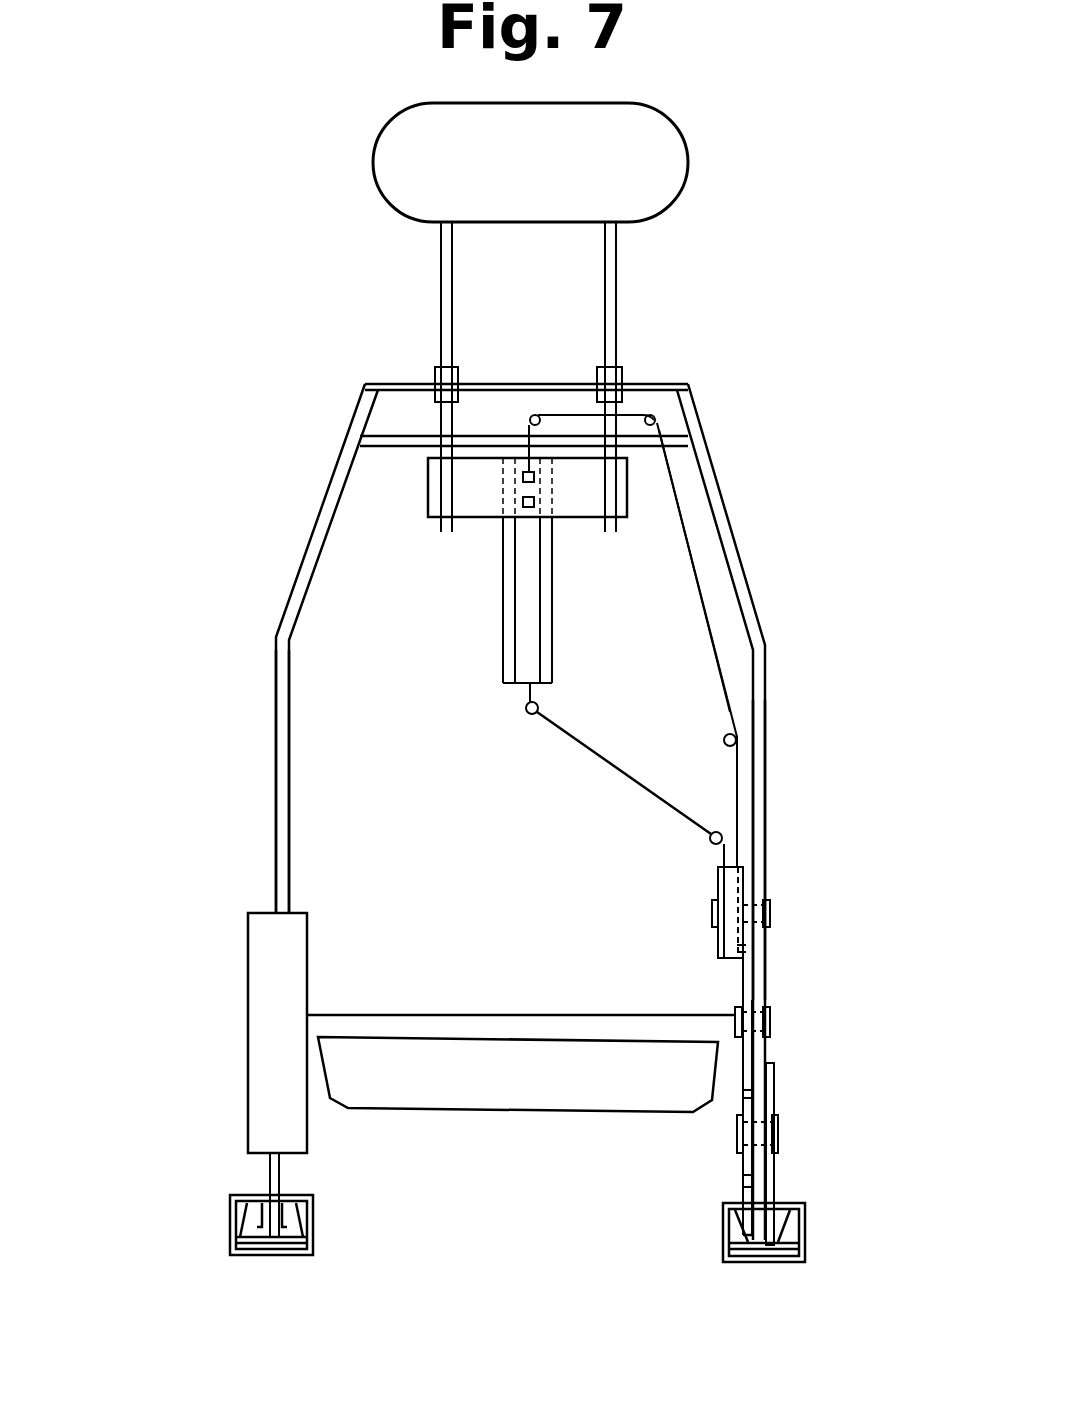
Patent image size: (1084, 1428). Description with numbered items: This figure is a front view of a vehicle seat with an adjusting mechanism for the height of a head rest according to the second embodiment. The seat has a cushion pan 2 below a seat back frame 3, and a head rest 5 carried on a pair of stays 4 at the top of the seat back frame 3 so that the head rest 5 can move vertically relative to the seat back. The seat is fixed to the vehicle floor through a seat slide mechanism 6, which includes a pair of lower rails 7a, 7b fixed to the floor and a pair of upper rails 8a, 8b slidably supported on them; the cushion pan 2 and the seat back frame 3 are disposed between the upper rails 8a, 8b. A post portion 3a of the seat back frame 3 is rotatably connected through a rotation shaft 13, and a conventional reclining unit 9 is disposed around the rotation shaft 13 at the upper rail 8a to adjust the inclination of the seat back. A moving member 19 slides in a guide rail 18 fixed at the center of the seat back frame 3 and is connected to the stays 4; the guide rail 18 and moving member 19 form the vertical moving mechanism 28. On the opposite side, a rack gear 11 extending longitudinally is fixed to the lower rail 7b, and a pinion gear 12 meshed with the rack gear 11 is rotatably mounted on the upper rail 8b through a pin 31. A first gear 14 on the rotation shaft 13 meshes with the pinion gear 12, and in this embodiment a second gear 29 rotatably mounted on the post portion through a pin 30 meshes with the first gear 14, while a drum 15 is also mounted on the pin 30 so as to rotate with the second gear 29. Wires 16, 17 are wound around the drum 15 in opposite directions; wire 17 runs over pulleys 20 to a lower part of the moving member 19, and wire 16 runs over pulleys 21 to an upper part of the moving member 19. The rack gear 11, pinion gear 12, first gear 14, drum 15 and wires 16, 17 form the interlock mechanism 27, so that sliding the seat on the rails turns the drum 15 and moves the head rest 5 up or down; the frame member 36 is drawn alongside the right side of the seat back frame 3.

The cushion pan 2 is at (517, 1100).
The seat back frame 3 is at (298, 526).
The post portion 3a is at (276, 780).
The stay 4 is at (612, 298).
The head rest 5 is at (655, 158).
The seat slide mechanism 6 is at (225, 1228).
The lower rail 7a is at (283, 1258).
The lower rail 7b is at (805, 1245).
The upper rail 8a is at (285, 1178).
The upper rail 8b is at (762, 1175).
The reclining unit 9 is at (258, 1063).
The rack gear 11 is at (745, 1195).
The pinion gear 12 is at (745, 1160).
The rotation shaft 13 is at (770, 1025).
The first gear 14 is at (778, 1078).
The drum 15 is at (728, 885).
The wire 16 is at (702, 590).
The wire 17 is at (605, 768).
The guide rail 18 is at (515, 640).
The moving member 19 is at (465, 490).
The pulley 20 is at (540, 706).
The pulley 21 is at (535, 414).
The interlock mechanism 27 is at (688, 968).
The vertical moving mechanism 28 is at (490, 547).
The second gear 29 is at (748, 932).
The pin 30 is at (770, 905).
The pin 31 is at (778, 1130).
The frame member 36 is at (765, 840).